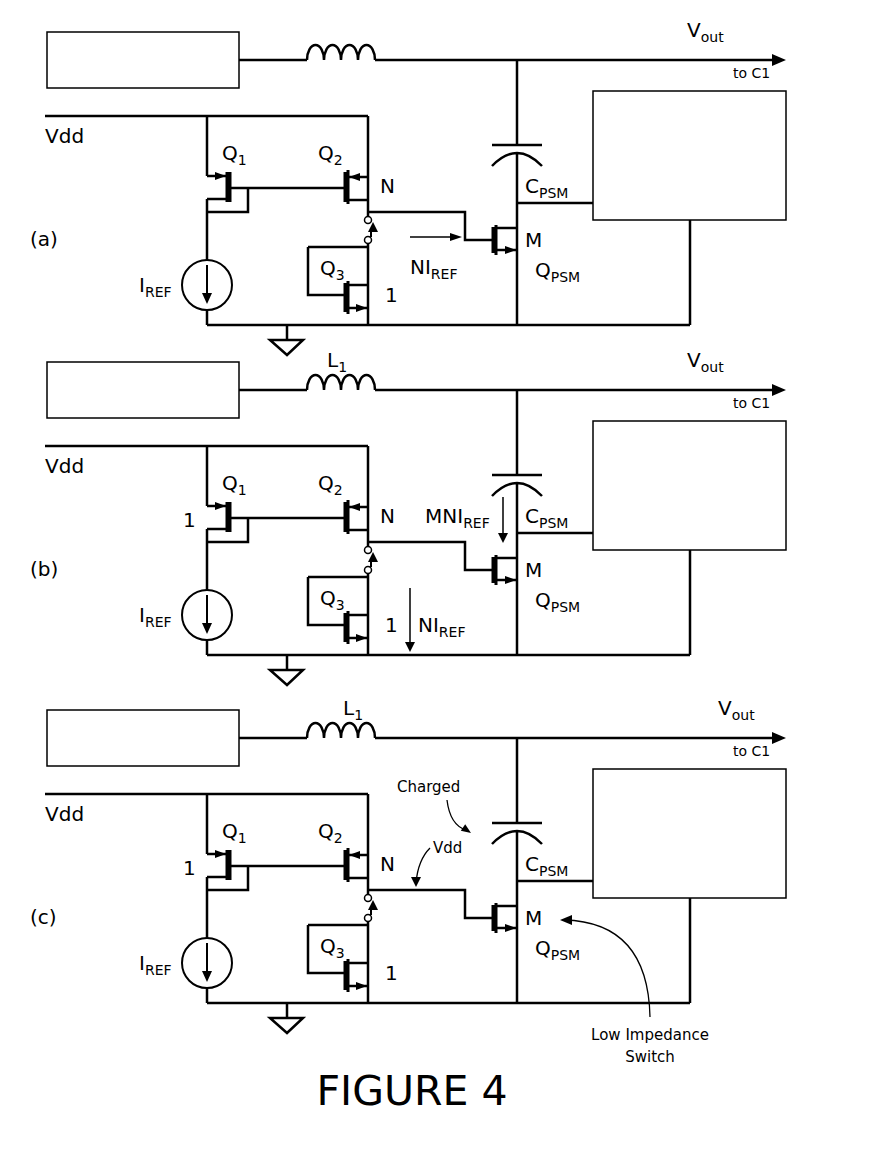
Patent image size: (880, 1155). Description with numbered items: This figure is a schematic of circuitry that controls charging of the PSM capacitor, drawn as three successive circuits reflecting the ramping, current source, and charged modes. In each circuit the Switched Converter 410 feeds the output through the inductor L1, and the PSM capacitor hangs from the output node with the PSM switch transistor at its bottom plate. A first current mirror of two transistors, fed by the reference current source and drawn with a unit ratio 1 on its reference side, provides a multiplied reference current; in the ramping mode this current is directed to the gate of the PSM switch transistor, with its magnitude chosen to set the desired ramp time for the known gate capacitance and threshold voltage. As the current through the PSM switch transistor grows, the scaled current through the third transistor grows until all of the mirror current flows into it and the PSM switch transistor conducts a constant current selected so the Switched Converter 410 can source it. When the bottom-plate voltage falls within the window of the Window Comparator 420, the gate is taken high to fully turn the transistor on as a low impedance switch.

The Switched Converter 410 is at (143, 399).
The Window Comparator 420 is at (689, 494).
The unit-ratio transistor Q1 1 is at (206, 187).
The inductor L1 is at (341, 39).